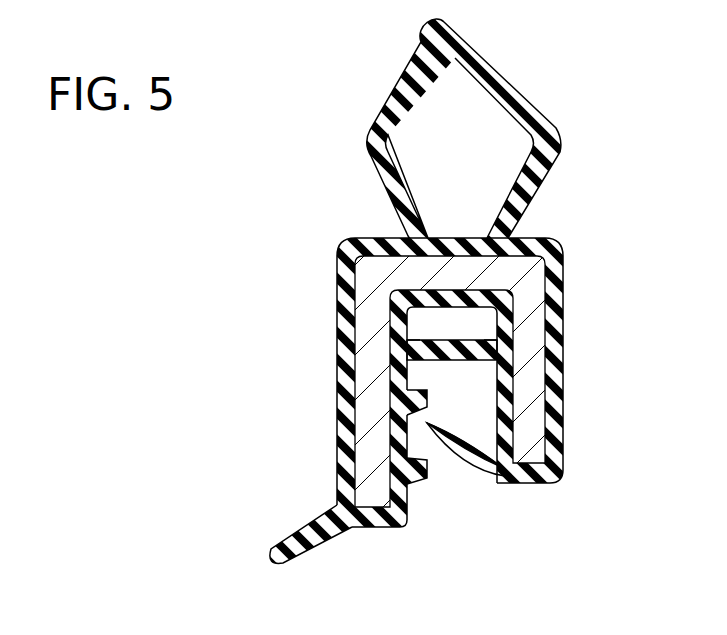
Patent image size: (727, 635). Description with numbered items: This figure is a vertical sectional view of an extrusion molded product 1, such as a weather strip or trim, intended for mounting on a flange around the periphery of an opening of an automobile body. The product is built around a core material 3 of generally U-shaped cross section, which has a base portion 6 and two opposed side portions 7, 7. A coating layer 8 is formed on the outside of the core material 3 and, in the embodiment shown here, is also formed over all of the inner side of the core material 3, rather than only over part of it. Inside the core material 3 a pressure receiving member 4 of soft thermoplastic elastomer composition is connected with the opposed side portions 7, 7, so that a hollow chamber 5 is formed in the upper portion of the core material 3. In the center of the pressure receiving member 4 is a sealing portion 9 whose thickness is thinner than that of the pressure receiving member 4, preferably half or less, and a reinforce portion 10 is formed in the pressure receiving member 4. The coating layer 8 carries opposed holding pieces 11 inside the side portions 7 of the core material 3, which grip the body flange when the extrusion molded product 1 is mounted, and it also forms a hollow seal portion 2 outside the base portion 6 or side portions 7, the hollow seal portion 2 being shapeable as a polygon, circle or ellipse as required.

The extrusion molded product 1 is at (378, 201).
The hollow seal portion 2 is at (524, 110).
The core material 3 is at (368, 262).
The pressure receiving member 4 is at (418, 370).
The hollow chamber 5 is at (470, 322).
The base portion 6 is at (455, 274).
The side portions 7 is at (367, 400).
The coating layer 8 is at (397, 443).
The sealing portion 9 is at (440, 350).
The reinforce portion 10 is at (420, 346).
The holding pieces 11 is at (421, 483).